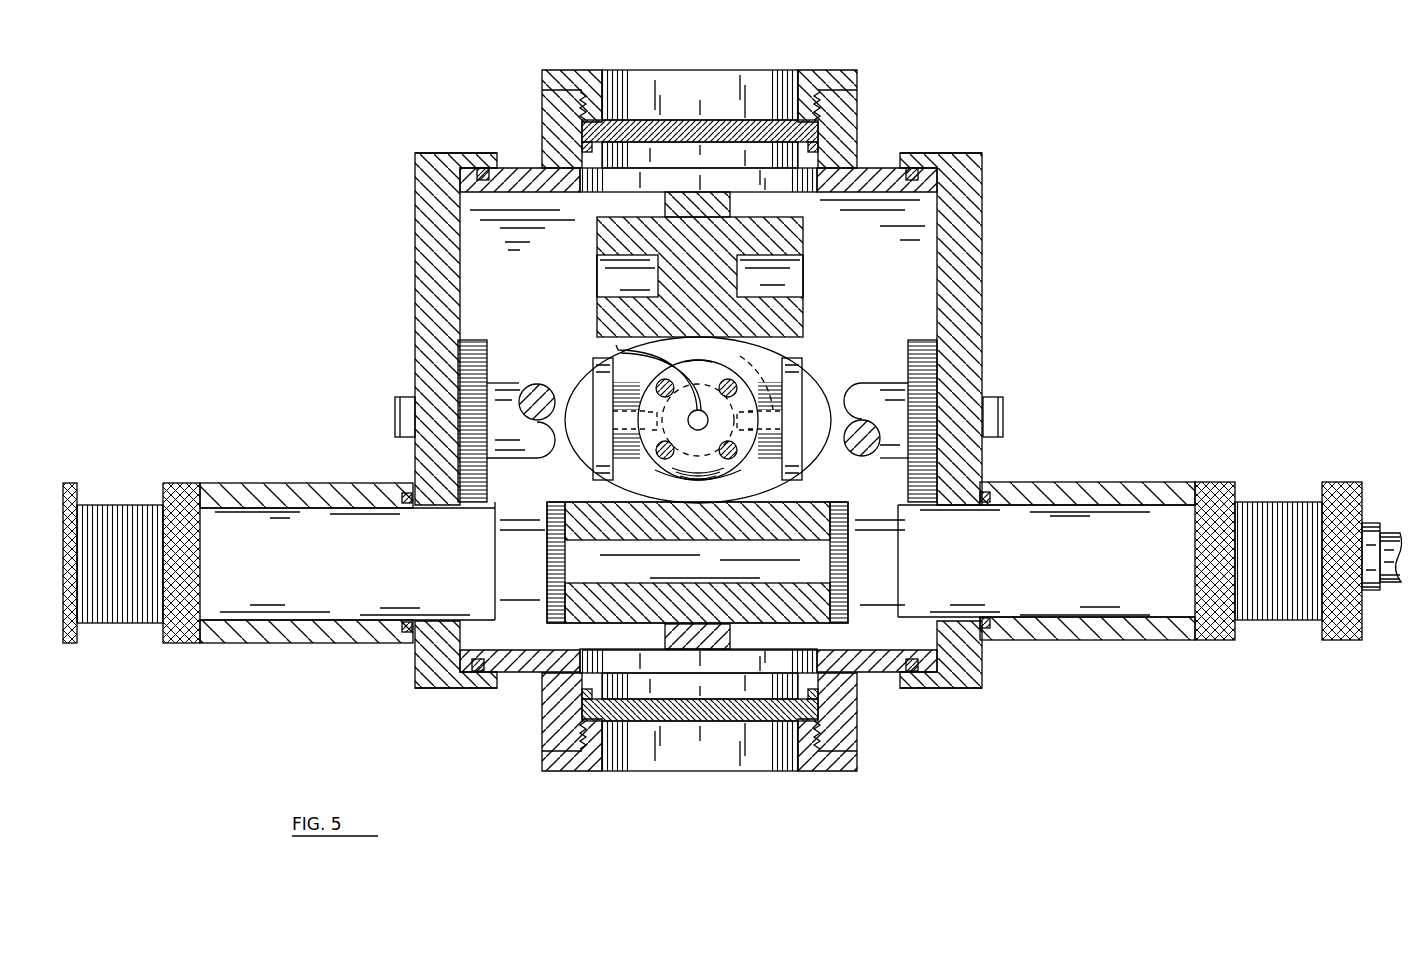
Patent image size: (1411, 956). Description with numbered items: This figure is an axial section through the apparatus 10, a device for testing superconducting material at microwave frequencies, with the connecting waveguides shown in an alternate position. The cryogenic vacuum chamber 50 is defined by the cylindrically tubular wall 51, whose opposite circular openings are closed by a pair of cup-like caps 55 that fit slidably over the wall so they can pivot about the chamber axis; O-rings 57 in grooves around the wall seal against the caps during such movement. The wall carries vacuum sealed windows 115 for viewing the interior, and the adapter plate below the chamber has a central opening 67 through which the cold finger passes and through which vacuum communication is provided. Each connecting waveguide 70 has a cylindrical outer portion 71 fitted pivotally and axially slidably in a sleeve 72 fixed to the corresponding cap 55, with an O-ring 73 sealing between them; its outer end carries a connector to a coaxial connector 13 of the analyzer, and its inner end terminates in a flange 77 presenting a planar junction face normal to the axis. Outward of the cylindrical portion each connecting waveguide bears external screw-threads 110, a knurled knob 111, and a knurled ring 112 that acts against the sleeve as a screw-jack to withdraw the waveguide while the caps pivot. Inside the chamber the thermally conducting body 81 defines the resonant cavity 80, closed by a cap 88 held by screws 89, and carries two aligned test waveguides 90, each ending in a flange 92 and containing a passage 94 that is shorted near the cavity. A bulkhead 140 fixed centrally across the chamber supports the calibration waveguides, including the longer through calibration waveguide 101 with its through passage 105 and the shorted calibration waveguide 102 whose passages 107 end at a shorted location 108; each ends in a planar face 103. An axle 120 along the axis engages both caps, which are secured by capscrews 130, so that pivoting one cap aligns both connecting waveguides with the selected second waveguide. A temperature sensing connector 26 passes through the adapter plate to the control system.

The apparatus 10 is at (1048, 192).
The coaxial connector 13 is at (1393, 541).
The temperature sensing connector 26 is at (618, 350).
The cryogenic vacuum chamber 50 is at (912, 172).
The cylindrically tubular wall 51 is at (896, 210).
The end cap 55 is at (432, 150).
The O-ring 57 is at (480, 674).
The central opening 67 is at (818, 370).
The connecting waveguide 70 is at (120, 495).
The cylindrical outer portion 71 is at (345, 574).
The sleeve 72 is at (293, 482).
The O-ring 73 is at (406, 633).
The flange 77 is at (553, 620).
The resonant cavity 80 is at (700, 358).
The thermally conducting body 81 is at (676, 483).
The cap 88 is at (712, 476).
The screw 89 is at (662, 447).
The test waveguide 90 is at (610, 458).
The flange 92 is at (598, 392).
The passage 94 is at (768, 392).
The longer through calibration waveguide 101 is at (653, 605).
The shorted calibration waveguide 102 is at (816, 240).
The face 103 is at (596, 243).
The passage 105 is at (773, 568).
The passage 107 is at (605, 292).
The location 108 is at (658, 270).
The external screw-threads 110 is at (1281, 620).
The knurled knob 111 is at (1345, 632).
The knurled ring 112 is at (1212, 632).
The window 115 is at (722, 121).
The axle 120 is at (480, 343).
The capscrew 130 is at (395, 432).
The bulkhead 140 is at (710, 192).